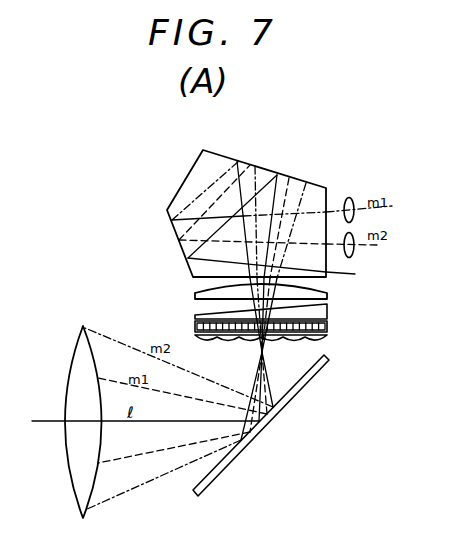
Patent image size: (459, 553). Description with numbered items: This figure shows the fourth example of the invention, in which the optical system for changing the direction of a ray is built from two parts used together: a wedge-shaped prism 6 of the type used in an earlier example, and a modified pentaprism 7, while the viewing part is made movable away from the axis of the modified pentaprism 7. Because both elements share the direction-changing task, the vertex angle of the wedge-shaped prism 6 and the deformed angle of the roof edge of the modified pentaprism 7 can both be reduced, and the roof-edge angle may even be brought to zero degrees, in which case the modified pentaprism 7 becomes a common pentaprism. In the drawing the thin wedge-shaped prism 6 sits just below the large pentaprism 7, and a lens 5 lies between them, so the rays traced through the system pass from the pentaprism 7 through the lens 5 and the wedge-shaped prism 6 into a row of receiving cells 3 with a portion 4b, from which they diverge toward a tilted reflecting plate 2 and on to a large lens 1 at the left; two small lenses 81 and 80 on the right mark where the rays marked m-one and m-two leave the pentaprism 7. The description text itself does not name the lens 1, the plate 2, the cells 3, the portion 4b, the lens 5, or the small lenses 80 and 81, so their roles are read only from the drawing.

The objective lens 1 is at (83, 326).
The mirror 2 is at (302, 390).
The light receiving element array 3 is at (248, 327).
The light receiving portion 4b is at (195, 322).
The lens 5 is at (195, 295).
The wedge-shaped prism 6 is at (327, 306).
The modified pentaprism 7 is at (326, 183).
The lens 80 is at (353, 253).
The lens 81 is at (355, 199).